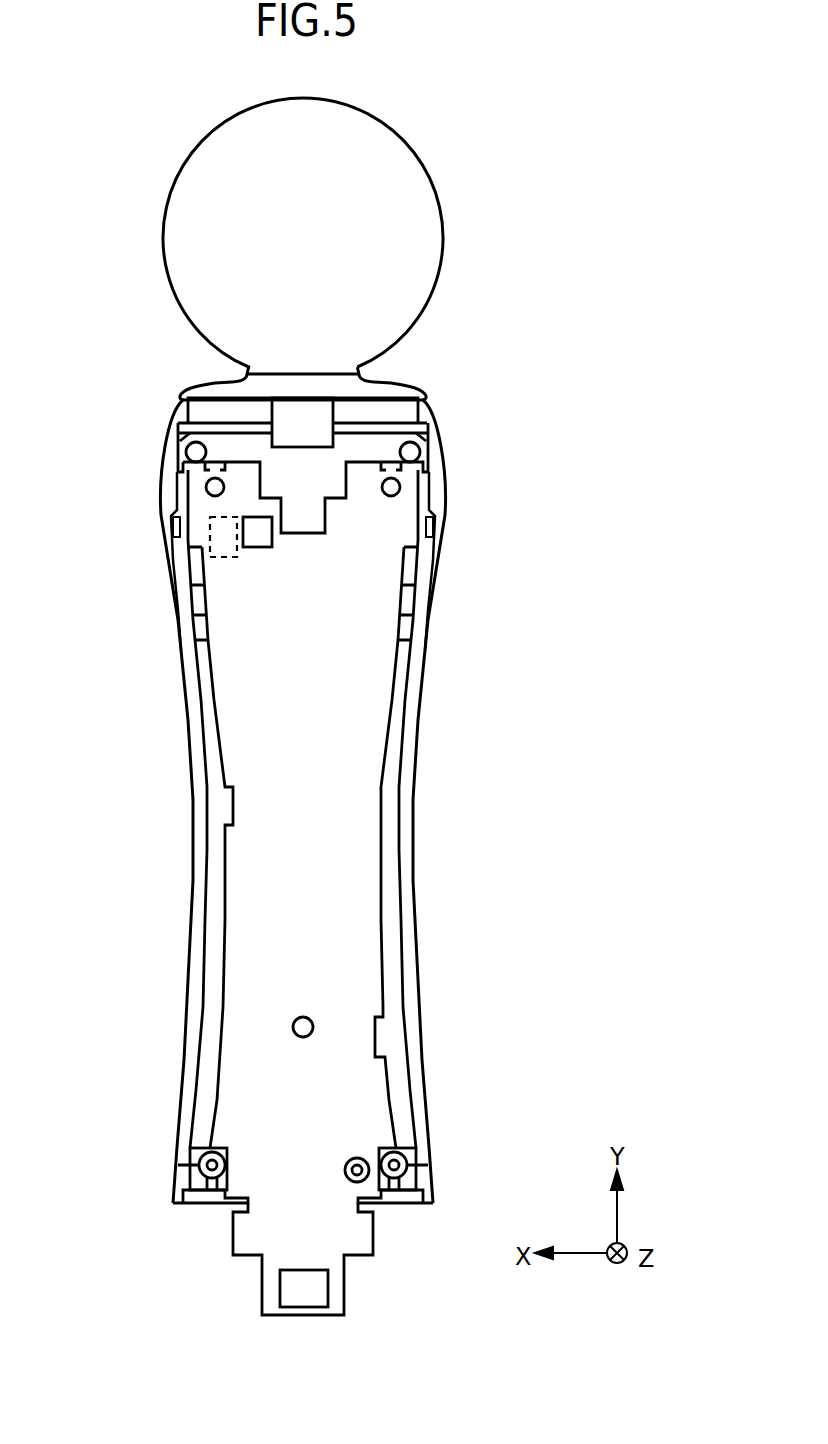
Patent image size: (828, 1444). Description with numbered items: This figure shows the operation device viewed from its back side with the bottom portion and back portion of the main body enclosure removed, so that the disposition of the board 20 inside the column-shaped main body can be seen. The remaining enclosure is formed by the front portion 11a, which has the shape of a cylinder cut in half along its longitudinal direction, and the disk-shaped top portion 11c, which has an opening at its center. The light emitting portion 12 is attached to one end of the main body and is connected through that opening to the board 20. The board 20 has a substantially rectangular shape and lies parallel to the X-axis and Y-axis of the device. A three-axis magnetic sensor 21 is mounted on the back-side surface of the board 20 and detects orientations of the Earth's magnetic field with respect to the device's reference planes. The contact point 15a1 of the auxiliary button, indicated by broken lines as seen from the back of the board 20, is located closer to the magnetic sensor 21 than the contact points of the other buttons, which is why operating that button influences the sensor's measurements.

The light emitting portion 12 is at (432, 232).
The top portion 11c is at (410, 385).
The front portion 11a is at (418, 976).
The board 20 is at (225, 848).
The magnetic sensor 21 is at (257, 537).
The contact point 15a1 is at (210, 556).